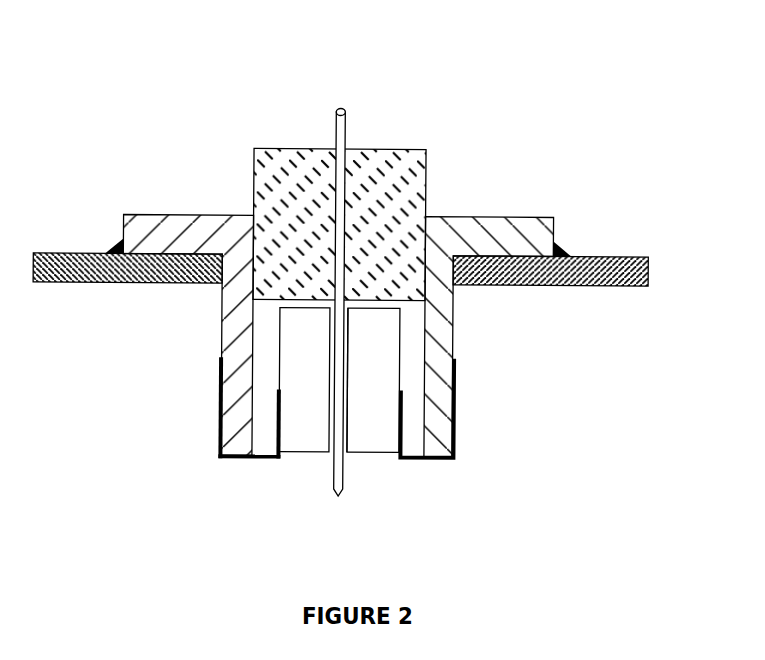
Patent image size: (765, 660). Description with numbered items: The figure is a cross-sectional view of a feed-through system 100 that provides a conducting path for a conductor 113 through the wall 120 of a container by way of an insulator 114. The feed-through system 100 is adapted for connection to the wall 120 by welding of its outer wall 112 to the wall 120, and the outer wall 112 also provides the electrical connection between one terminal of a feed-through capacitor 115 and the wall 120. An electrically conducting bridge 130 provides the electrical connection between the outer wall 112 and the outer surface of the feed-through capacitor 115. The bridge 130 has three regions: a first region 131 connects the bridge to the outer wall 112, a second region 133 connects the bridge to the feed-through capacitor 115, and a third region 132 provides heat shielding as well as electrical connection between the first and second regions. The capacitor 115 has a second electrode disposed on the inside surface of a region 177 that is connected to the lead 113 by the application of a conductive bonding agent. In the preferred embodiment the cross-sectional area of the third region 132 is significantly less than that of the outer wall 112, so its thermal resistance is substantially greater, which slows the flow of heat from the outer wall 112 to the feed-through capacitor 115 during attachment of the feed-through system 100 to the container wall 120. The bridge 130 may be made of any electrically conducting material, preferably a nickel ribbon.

The feed-through system 100 is at (78, 79).
The outer wall 112 is at (163, 216).
The conductor 113 is at (340, 125).
The insulator 114 is at (418, 185).
The feed-through capacitor 115 is at (390, 327).
The wall 120 is at (637, 287).
The electrically conducting bridge 130 is at (402, 463).
The first region 131 is at (220, 419).
The third region 132 is at (267, 460).
The second region 133 is at (281, 410).
The region 177 is at (348, 410).